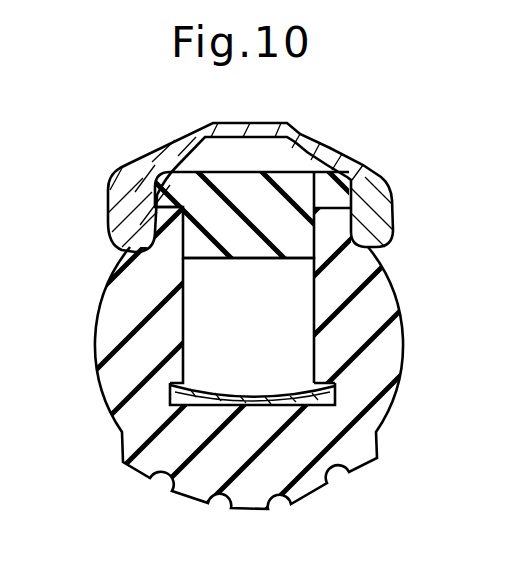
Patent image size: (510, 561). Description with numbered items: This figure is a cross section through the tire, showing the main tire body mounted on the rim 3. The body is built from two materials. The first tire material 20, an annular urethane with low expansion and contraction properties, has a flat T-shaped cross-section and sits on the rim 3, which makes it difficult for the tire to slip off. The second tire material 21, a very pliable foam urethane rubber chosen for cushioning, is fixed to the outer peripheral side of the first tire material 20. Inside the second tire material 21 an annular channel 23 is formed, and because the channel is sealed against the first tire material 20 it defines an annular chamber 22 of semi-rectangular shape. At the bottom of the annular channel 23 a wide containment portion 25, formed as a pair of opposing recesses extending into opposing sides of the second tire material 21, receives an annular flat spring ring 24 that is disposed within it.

The rim 3 is at (377, 197).
The first tire material 20 is at (172, 187).
The second tire material 21 is at (129, 432).
The annular chamber 22 is at (300, 295).
The annular channel 23 is at (183, 320).
The annular flat spring ring 24 is at (257, 395).
The containment portion 25 is at (332, 406).